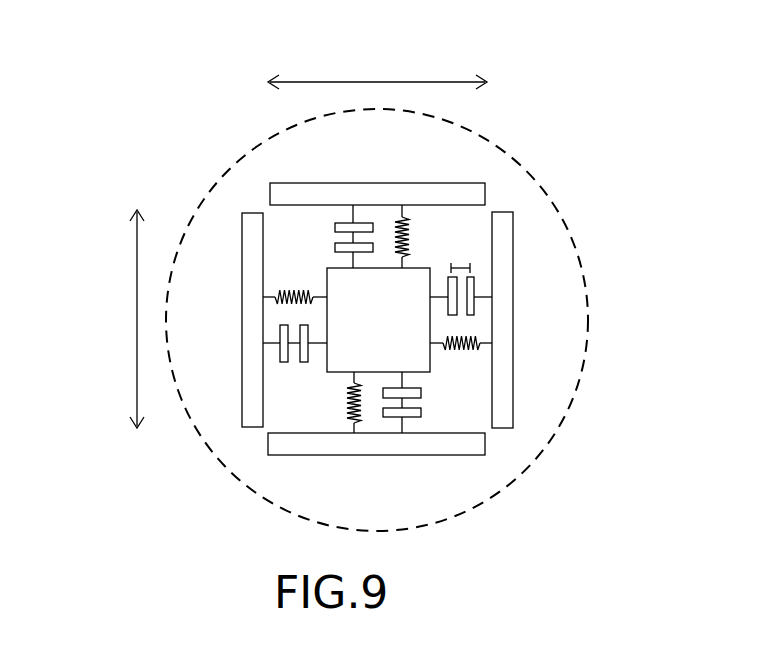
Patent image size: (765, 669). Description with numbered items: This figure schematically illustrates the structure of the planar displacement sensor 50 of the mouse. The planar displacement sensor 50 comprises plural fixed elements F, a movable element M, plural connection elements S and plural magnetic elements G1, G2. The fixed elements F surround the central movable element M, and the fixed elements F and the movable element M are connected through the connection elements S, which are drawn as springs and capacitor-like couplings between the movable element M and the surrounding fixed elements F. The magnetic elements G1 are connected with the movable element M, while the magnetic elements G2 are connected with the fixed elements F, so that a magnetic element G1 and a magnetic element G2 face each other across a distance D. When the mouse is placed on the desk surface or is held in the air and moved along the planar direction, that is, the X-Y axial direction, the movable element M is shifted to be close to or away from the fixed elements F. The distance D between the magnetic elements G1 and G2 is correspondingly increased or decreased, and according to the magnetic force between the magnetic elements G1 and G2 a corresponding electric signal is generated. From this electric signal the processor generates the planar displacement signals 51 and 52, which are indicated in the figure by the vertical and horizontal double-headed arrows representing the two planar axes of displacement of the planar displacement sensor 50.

The planar displacement sensor 50 is at (228, 147).
The planar displacement signal 51 is at (136, 320).
The planar displacement signal 52 is at (385, 82).
The fixed element F is at (503, 368).
The movable element M is at (337, 355).
The connection element S is at (460, 350).
The magnetic element G1 is at (450, 291).
The magnetic element G2 is at (470, 284).
The distance D is at (456, 264).